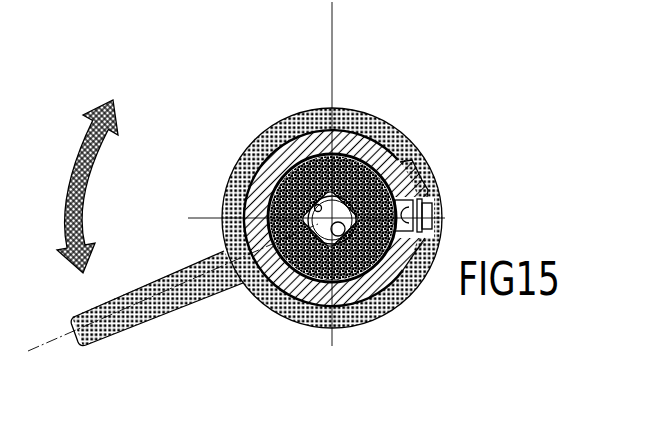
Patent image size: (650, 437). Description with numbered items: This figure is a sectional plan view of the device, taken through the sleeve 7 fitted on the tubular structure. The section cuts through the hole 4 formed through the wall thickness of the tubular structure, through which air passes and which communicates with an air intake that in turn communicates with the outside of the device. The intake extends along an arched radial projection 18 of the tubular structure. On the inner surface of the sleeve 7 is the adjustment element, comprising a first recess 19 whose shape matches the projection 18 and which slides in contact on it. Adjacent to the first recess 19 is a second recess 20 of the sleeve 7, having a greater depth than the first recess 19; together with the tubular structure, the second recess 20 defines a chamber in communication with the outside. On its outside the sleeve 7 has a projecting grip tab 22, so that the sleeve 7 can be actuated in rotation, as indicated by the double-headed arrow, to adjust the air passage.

The sleeve 7 is at (268, 128).
The hole 4 is at (416, 248).
The arched radial projection 18 is at (418, 196).
The second recess 20 is at (425, 196).
The first recess 19 is at (445, 218).
The projecting grip tab 22 is at (135, 283).